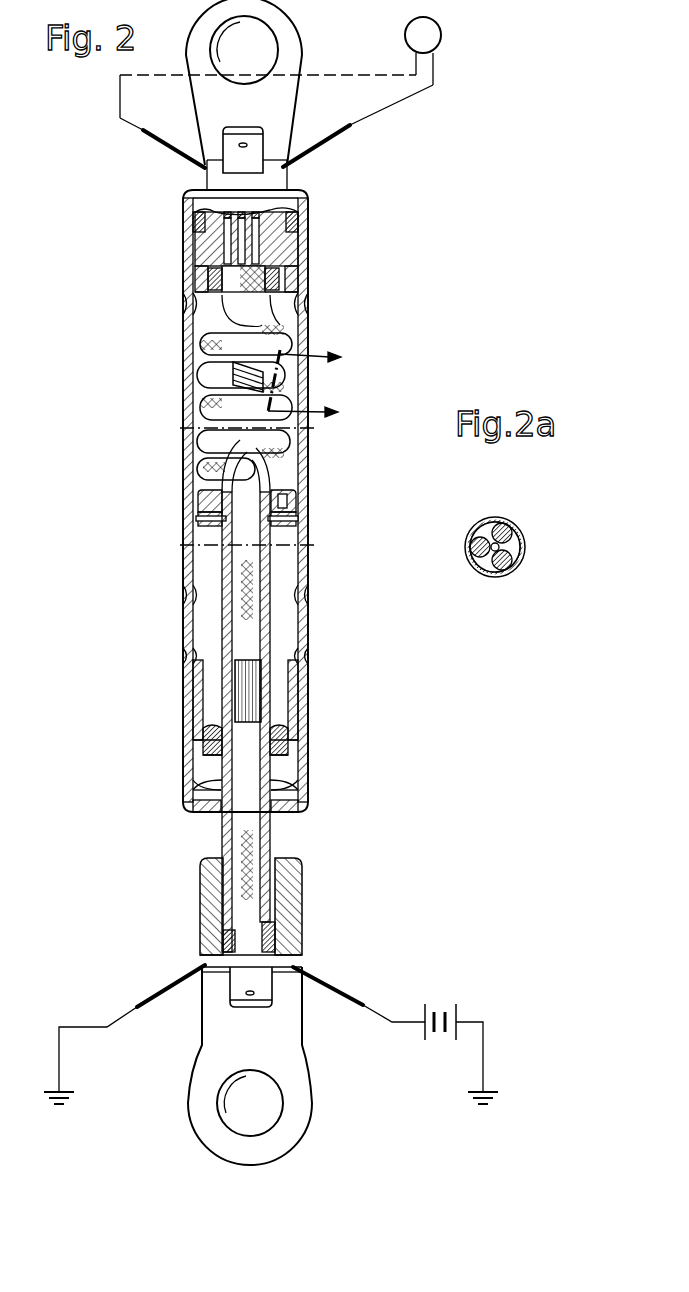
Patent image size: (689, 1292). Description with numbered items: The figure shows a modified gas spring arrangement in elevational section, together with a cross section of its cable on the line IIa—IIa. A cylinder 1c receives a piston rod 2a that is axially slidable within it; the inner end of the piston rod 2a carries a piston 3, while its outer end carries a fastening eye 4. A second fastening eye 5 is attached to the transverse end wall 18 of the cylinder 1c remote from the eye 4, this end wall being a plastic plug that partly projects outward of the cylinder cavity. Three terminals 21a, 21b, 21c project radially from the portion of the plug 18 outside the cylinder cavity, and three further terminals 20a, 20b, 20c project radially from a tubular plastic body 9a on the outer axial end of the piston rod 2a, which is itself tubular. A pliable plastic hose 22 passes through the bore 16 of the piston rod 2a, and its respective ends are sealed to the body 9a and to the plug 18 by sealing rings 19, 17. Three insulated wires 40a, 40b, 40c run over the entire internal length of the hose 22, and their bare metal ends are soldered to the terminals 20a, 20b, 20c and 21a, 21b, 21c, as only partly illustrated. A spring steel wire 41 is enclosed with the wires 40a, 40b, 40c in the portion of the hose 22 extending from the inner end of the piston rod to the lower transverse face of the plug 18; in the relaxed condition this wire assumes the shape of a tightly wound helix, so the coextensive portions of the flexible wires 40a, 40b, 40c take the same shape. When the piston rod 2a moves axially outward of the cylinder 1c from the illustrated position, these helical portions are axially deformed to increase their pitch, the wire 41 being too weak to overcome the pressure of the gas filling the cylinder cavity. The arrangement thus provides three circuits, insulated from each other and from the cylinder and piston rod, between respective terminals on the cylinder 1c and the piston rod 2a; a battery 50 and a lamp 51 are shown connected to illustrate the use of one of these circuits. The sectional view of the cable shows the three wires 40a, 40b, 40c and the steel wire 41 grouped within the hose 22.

In FIG. 2, the cylinder 1c is at (305, 470).
In FIG. 2, the piston rod 2a is at (268, 565).
In FIG. 2, the piston 3 is at (208, 500).
In FIG. 2, the fastening eye 4 is at (300, 1070).
In FIG. 2, the fastening eye 5 is at (292, 47).
In FIG. 2, the tubular plastic body 9a is at (298, 866).
In FIG. 2, the bore 16 is at (264, 624).
In FIG. 2, the sealing ring 17 is at (282, 276).
In FIG. 2, the transverse end wall 18 is at (290, 250).
In FIG. 2, the sealing ring 19 is at (285, 948).
In FIG. 2, the terminal 20a is at (325, 985).
In FIG. 2, the terminal 20b is at (268, 1008).
In FIG. 2, the terminal 20c is at (160, 1010).
In FIG. 2, the terminal 21a is at (332, 141).
In FIG. 2, the terminal 21b is at (265, 135).
In FIG. 2, the terminal 21c is at (168, 150).
In FIG. 2, the pliable plastic hose 22 is at (285, 380).
In FIG. 2A, the pliable plastic hose 22 is at (480, 572).
In FIG. 2, the insulated wire 40a is at (228, 232).
In FIG. 2A, the insulated wire 40a is at (475, 545).
In FIG. 2, the insulated wire 40b is at (240, 265).
In FIG. 2A, the insulated wire 40b is at (505, 577).
In FIG. 2, the insulated wire 40c is at (285, 216).
In FIG. 2A, the insulated wire 40c is at (505, 530).
In FIG. 2A, the spring steel wire 41 is at (507, 548).
In FIG. 2, the battery 50 is at (438, 1008).
In FIG. 2, the lamp 51 is at (442, 36).